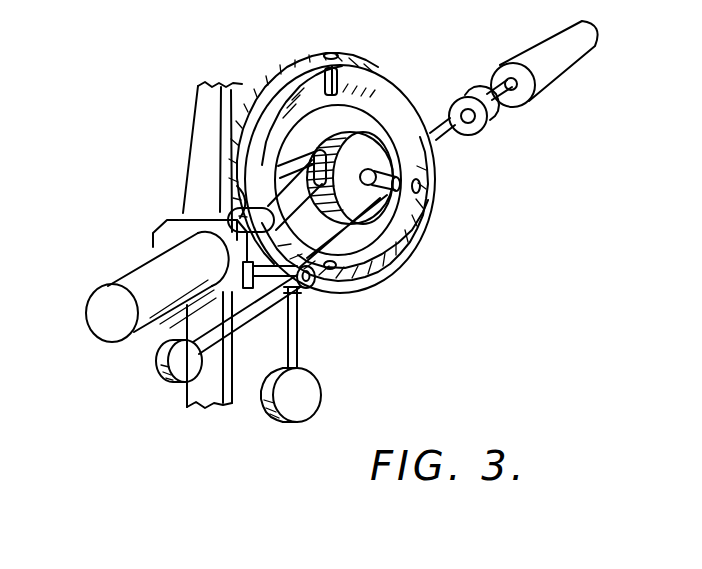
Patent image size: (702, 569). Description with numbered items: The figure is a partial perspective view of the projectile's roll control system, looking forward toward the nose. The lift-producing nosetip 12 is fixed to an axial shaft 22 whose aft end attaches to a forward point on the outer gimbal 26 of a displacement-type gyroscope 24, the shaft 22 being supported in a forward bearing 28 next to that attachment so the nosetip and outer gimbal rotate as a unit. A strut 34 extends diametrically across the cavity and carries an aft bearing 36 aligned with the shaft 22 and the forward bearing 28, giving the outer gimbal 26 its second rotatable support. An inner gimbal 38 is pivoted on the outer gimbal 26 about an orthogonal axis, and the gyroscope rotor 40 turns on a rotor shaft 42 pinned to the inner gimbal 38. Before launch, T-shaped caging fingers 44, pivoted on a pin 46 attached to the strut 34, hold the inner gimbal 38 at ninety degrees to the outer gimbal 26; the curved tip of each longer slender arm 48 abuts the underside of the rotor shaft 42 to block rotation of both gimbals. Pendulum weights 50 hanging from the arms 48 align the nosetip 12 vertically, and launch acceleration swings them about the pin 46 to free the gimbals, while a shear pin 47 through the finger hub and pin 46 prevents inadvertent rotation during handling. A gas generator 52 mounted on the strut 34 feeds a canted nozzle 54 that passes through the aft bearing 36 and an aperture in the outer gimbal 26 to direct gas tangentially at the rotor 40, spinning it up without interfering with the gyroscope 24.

The lift-producing nosetip 12 is at (577, 60).
The axial shaft 22 is at (494, 80).
The displacement-type gyroscope 24 is at (462, 184).
The outer gimbal 26 is at (366, 58).
The forward bearing 28 is at (492, 125).
The strut 34 is at (197, 138).
The aft bearing 36 is at (230, 216).
The inner gimbal 38 is at (398, 108).
The gyroscope rotor 40 is at (322, 160).
The rotor shaft 42 is at (382, 170).
The caging fingers 44 is at (326, 337).
The pin 46 is at (298, 292).
The shear pin 47 is at (216, 264).
The slender arm 48 is at (330, 232).
The pendulum weights 50 is at (280, 397).
The gas generator 52 is at (96, 305).
The canted nozzle 54 is at (288, 198).